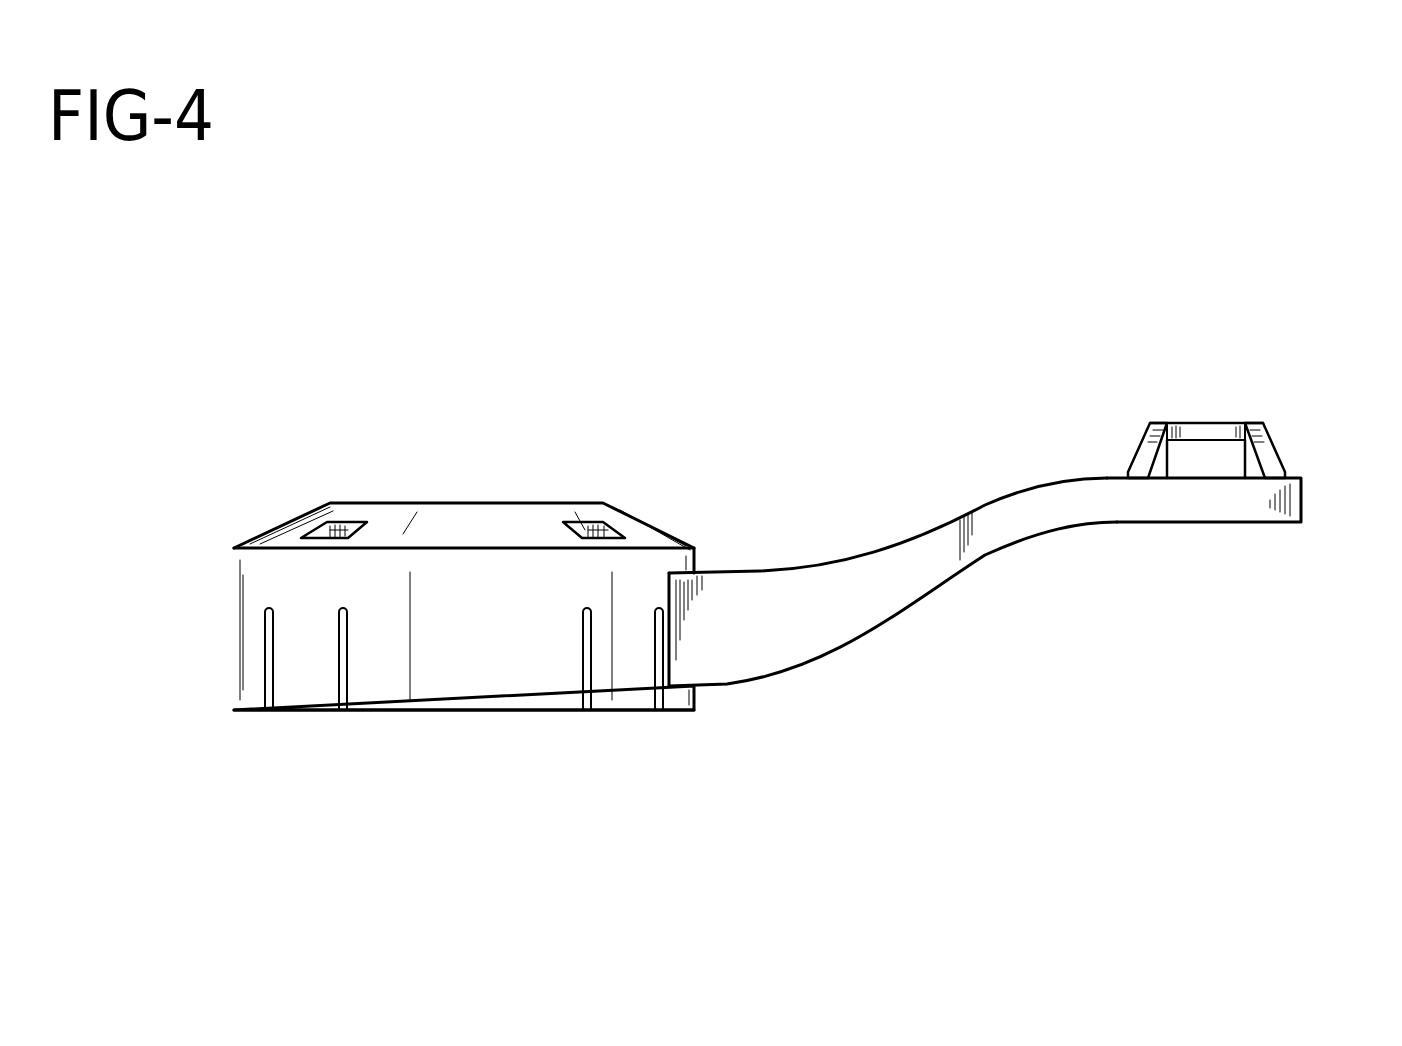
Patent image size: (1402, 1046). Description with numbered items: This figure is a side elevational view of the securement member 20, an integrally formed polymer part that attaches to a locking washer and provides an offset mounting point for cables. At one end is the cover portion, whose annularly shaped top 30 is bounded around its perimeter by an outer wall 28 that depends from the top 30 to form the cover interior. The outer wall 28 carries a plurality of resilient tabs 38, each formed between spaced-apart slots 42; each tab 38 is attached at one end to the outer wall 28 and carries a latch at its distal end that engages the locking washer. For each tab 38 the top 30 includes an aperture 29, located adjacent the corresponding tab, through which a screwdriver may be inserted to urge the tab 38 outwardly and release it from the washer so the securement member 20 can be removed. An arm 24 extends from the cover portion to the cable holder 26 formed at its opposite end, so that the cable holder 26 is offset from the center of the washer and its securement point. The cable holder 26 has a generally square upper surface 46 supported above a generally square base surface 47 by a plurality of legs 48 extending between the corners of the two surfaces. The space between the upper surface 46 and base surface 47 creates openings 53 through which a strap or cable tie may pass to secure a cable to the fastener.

The securement member 20 is at (440, 360).
The arm 24 is at (843, 608).
The cable holder 26 is at (1258, 522).
The outer wall 28 is at (465, 712).
The aperture 29 is at (583, 522).
The top 30 is at (377, 503).
The resilient tab 38 is at (303, 712).
The slot 42 is at (338, 712).
The upper surface 46 is at (1205, 423).
The base surface 47 is at (1150, 503).
The leg 48 is at (1145, 450).
The opening 53 is at (1220, 457).